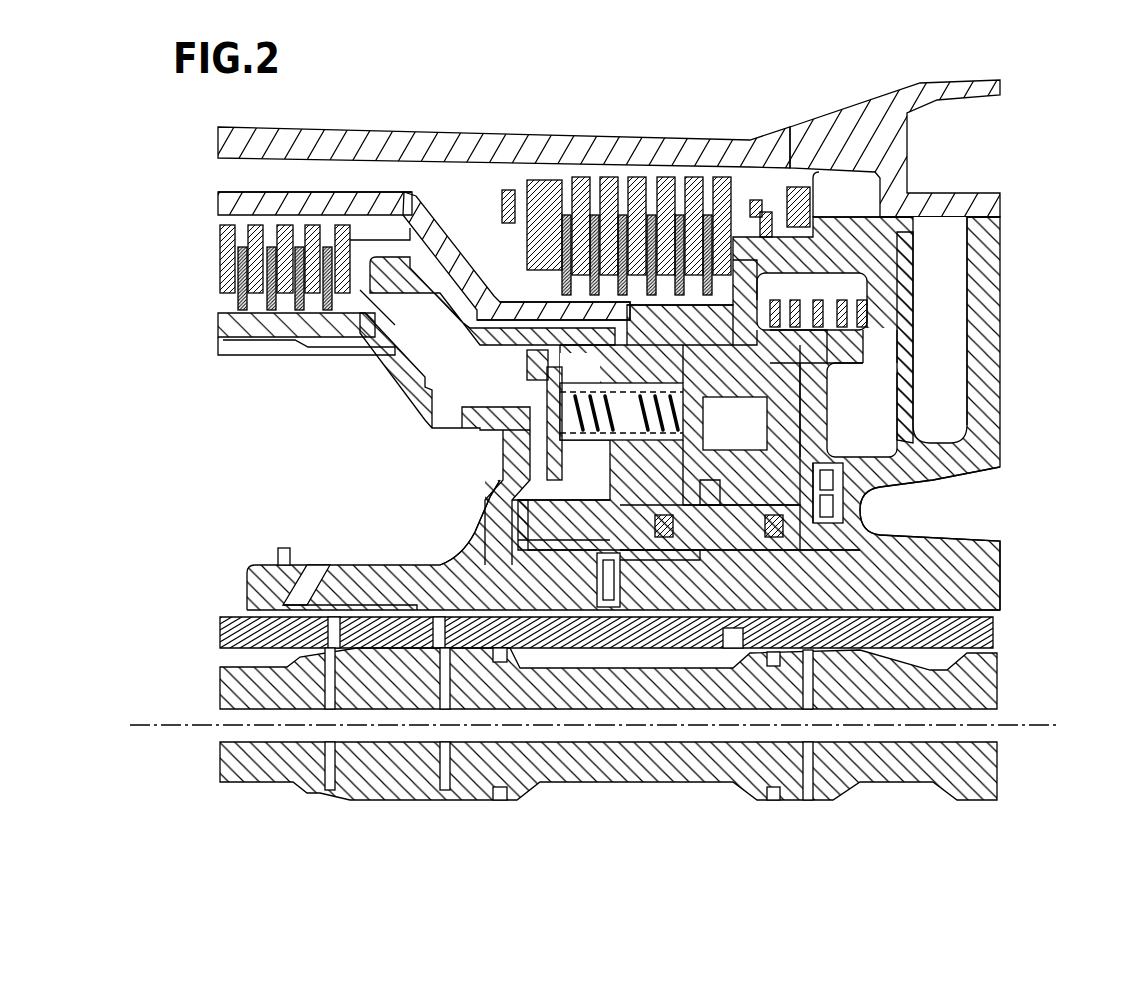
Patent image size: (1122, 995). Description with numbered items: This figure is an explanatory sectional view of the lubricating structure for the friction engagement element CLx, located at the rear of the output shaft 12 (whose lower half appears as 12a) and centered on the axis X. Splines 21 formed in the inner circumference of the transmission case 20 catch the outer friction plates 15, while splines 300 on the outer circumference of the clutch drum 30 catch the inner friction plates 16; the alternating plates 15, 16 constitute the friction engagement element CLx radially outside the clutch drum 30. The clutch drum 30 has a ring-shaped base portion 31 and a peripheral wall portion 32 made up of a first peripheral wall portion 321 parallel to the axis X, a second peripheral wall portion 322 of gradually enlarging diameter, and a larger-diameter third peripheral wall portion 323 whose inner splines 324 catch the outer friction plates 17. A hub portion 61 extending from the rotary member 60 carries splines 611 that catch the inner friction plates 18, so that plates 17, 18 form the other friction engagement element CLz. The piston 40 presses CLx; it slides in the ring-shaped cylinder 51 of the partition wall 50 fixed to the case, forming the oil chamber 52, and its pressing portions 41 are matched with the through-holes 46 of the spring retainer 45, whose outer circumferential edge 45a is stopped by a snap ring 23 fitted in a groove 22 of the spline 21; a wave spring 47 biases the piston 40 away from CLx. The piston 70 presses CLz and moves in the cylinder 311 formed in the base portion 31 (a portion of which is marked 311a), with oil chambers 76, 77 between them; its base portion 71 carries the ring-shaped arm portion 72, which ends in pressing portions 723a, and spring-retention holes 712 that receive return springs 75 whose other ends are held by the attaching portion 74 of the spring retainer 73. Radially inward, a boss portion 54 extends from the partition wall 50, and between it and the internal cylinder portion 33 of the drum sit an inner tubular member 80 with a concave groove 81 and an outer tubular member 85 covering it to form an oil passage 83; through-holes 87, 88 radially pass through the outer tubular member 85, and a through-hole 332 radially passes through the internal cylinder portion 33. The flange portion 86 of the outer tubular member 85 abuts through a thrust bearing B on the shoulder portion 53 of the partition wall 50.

The output shaft 12 is at (990, 680).
The input shaft lower half 12a is at (996, 745).
The outer friction plates 15 is at (607, 175).
The inner friction plates 16 is at (637, 177).
The outer friction plates 17 is at (218, 237).
The inner friction plates 18 is at (225, 275).
The transmission case 20 is at (897, 107).
The splines 21 is at (486, 177).
The groove 22 is at (766, 212).
The snap ring 23 is at (750, 200).
The clutch drum 30 is at (880, 415).
The base portion 31 is at (700, 245).
The ring-shaped cylinder 311 is at (657, 362).
The drum inner surface 311a is at (805, 417).
The peripheral wall portion 32 is at (424, 175).
The first peripheral wall portion 321 is at (547, 270).
The second peripheral wall portion 322 is at (457, 262).
The third peripheral wall portion 323 is at (368, 195).
The splines 324 is at (380, 223).
The splines 300 is at (517, 287).
The internal cylinder portion 33 is at (480, 495).
The through-hole 332 is at (575, 506).
The piston 40 is at (900, 282).
The pressing portions 41 is at (812, 301).
The spring retainer 45 is at (743, 342).
The outer circumferential edge 45a is at (797, 187).
The through-holes 46 is at (742, 288).
The wave spring 47 is at (816, 348).
The partition wall 50 is at (1004, 283).
The ring-shaped cylinder 51 is at (857, 237).
The oil chamber 52 is at (920, 337).
The shoulder portion 53 is at (868, 505).
The boss portion 54 is at (987, 580).
The rotary member 60 is at (400, 565).
The hub portion 61 is at (240, 330).
The splines 611 is at (260, 312).
The piston 70 is at (745, 515).
The base portion 71 is at (741, 426).
The spring-retention holes 712 is at (575, 383).
The arm portion 72 is at (477, 347).
The pressing portions 723a is at (363, 290).
The spring retainer 73 is at (547, 415).
The attaching portion 74 is at (547, 385).
The return spring 75 is at (621, 431).
The oil chamber 76 is at (831, 371).
The oil chamber 77 is at (862, 392).
The inner tubular member 80 is at (775, 537).
The concave groove 81 is at (640, 545).
The oil passage 83 is at (680, 535).
The outer tubular member 85 is at (822, 525).
The flange portion 86 is at (866, 498).
The through-holes 87 is at (702, 489).
The through-holes 88 is at (690, 525).
The thrust bearing B is at (850, 523).
The axis X is at (605, 724).
The friction engagement element CLx is at (616, 161).
The friction engagement element CLz is at (250, 264).